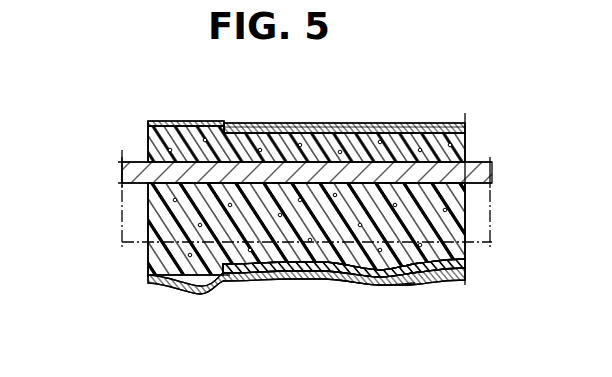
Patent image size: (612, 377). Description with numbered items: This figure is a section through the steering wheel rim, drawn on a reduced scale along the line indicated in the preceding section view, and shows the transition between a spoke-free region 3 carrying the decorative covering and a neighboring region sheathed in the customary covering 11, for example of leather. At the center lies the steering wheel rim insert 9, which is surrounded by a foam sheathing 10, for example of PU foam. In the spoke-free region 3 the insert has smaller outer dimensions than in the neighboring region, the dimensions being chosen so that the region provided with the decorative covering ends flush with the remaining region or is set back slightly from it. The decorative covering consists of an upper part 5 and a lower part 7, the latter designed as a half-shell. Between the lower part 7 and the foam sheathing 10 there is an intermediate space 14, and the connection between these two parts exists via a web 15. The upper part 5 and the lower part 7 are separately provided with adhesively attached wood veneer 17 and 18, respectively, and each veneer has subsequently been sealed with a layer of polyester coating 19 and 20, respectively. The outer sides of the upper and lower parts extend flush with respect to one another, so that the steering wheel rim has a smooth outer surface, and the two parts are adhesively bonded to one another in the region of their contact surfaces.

The spoke-free region 3 is at (300, 112).
The upper part 5 is at (247, 127).
The lower part 7 is at (278, 268).
The steering wheel rim insert 9 is at (122, 160).
The foam sheathing 10 is at (192, 266).
The customary covering 11 is at (158, 121).
The intermediate space 14 is at (236, 268).
The web 15 is at (388, 272).
The wood veneer 17 is at (344, 98).
The wood veneer 18 is at (306, 307).
The polyester coating 19 is at (370, 123).
The polyester coating 20 is at (330, 280).